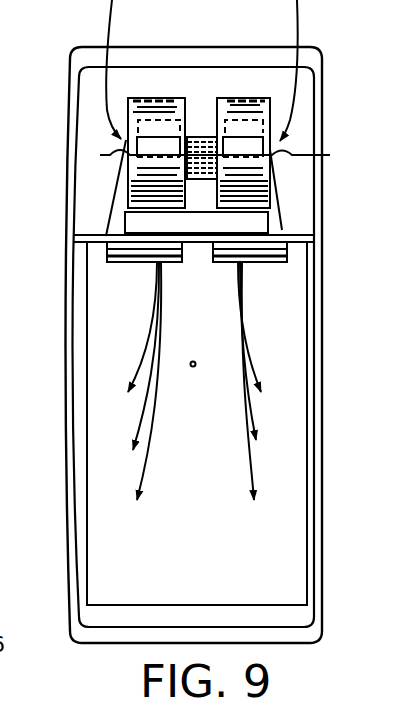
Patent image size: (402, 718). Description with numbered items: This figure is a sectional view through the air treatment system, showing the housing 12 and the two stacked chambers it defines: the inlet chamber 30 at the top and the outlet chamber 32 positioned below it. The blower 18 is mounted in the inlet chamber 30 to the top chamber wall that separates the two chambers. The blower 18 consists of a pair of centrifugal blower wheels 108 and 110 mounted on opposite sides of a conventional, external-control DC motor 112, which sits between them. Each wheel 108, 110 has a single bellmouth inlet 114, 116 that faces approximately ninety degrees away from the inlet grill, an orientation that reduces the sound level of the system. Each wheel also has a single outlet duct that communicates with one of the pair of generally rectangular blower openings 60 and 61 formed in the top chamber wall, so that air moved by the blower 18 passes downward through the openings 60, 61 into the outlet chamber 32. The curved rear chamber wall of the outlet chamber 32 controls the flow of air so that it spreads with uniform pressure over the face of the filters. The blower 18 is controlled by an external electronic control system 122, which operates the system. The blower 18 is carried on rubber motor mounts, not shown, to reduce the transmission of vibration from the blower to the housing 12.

The housing 12 is at (64, 211).
The inlet chamber 30 is at (201, 68).
The outlet chamber 32 is at (93, 428).
The centrifugal blower wheel 110 is at (150, 97).
The blower 18 is at (254, 96).
The DC motor 112 is at (200, 136).
The centrifugal blower wheel 108 is at (272, 108).
The bellmouth inlet 116 is at (237, 155).
The bellmouth inlet 114 is at (121, 150).
The electronic control system 122 is at (283, 228).
The blower opening 60 is at (131, 262).
The blower opening 61 is at (225, 262).